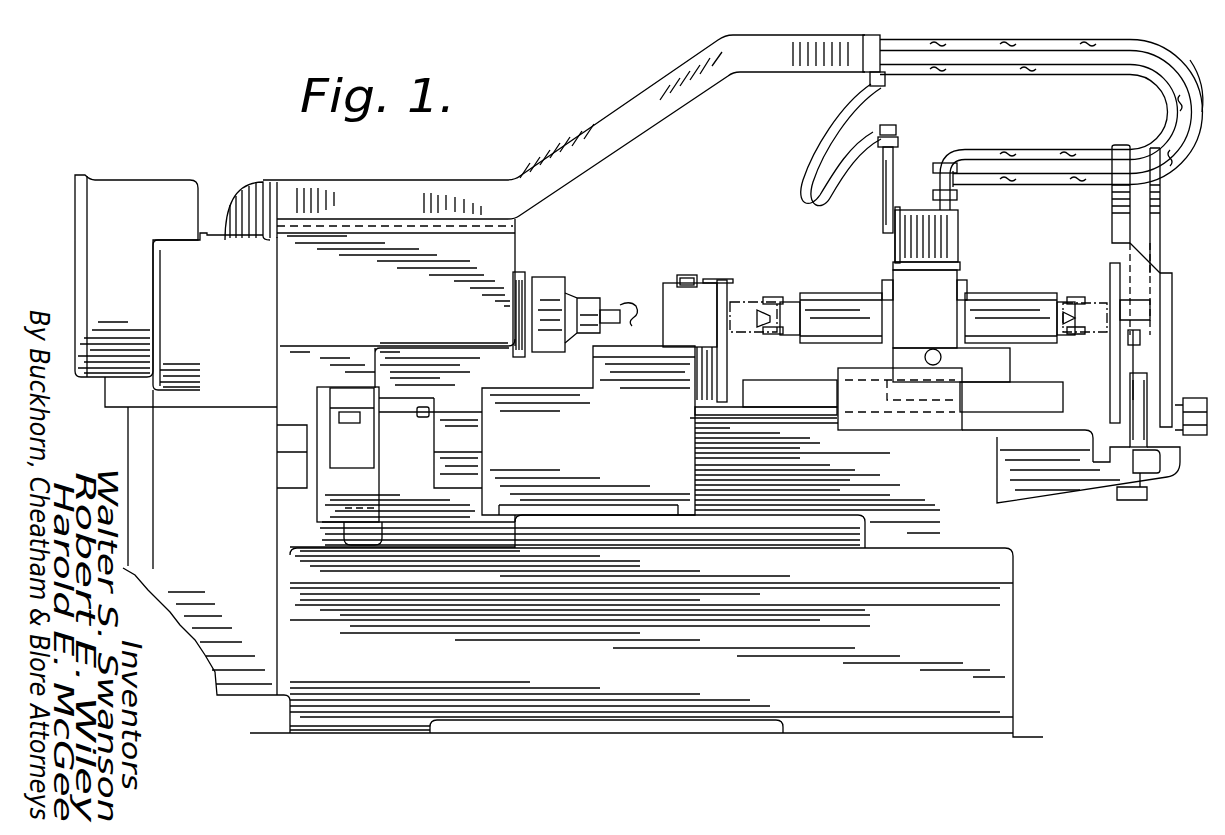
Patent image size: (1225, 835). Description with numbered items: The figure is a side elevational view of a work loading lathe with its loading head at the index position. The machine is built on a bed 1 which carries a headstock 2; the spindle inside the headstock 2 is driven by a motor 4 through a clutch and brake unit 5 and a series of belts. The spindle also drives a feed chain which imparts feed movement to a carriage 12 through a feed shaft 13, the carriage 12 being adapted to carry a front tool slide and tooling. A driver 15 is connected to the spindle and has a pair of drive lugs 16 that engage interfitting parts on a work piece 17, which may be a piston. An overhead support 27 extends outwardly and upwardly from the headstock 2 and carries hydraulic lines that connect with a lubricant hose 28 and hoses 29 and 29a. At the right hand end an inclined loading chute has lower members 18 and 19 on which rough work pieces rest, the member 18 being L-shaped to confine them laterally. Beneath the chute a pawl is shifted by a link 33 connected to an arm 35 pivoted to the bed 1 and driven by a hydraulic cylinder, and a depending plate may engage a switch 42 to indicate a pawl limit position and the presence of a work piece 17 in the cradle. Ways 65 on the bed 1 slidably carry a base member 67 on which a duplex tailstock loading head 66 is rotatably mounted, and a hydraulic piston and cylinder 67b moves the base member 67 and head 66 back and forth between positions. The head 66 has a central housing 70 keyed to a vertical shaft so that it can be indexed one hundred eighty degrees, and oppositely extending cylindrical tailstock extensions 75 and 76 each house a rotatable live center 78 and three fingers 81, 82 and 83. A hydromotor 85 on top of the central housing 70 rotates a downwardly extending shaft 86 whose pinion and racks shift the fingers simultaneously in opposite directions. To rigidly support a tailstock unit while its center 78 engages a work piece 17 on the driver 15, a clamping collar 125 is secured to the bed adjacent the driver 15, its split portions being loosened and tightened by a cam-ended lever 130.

The bed 1 is at (1000, 645).
The headstock 2 is at (530, 251).
The motor 4 is at (283, 190).
The clutch and brake unit 5 is at (136, 236).
The carriage 12 is at (588, 430).
The feed shaft 13 is at (409, 415).
The driver 15 is at (570, 278).
The drive lugs 16 is at (630, 302).
The work piece 17 is at (752, 338).
The lower member 18 is at (1112, 220).
The lower member 19 is at (1161, 230).
The overhead support 27 is at (618, 118).
The lubricant hose 28 is at (812, 157).
The hose 29 is at (1130, 72).
The hose 29a is at (1170, 50).
The link 33 is at (1135, 356).
The arm 35 is at (1142, 442).
The switch 42 is at (1130, 499).
The ways 65 is at (1050, 387).
The duplex tailstock loading head 66 is at (996, 278).
The base member 67 is at (1010, 367).
The hydraulic piston and cylinder 67b is at (1195, 398).
The central housing 70 is at (938, 327).
The cylindrical tailstock extension 75 is at (1020, 300).
The cylindrical tailstock extension 76 is at (795, 343).
The live center 78 is at (783, 308).
The finger 81 is at (771, 333).
The finger 82 is at (768, 296).
The finger 83 is at (1070, 335).
The hydromotor 85 is at (960, 235).
The shaft 86 is at (960, 265).
The clamping collar 125 is at (705, 331).
The lever 130 is at (700, 278).